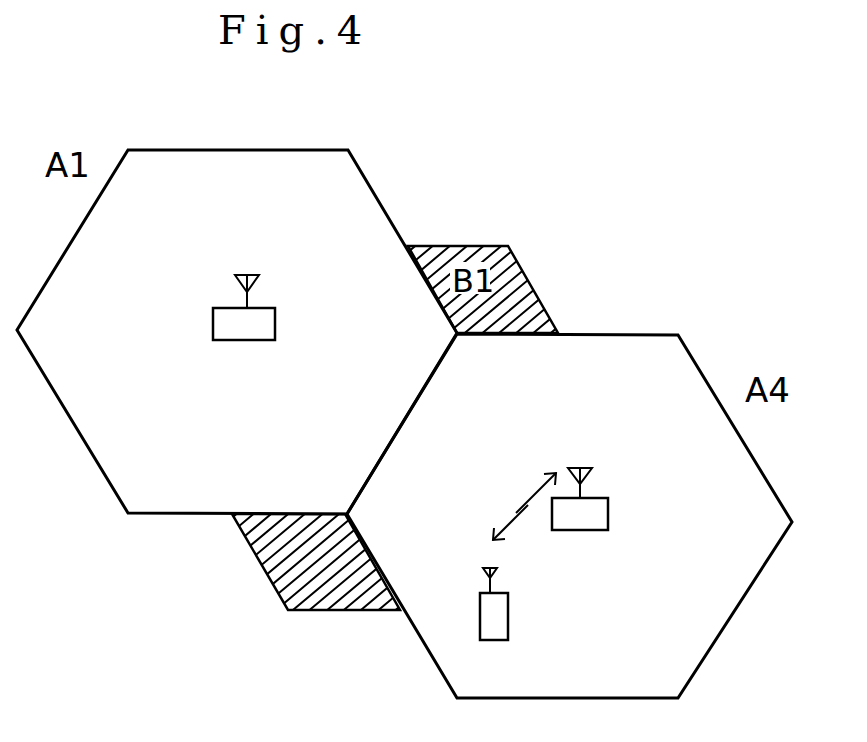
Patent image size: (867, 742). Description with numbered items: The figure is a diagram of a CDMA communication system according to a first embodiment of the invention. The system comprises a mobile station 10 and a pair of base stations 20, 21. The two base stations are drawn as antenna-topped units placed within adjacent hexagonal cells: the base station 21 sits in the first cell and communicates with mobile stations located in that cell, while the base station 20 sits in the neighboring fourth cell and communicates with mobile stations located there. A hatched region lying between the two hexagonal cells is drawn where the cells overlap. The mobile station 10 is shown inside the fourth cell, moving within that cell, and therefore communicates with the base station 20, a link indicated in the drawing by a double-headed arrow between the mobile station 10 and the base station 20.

The mobile station 10 is at (508, 615).
The base station 20 is at (608, 512).
The base station 21 is at (275, 321).